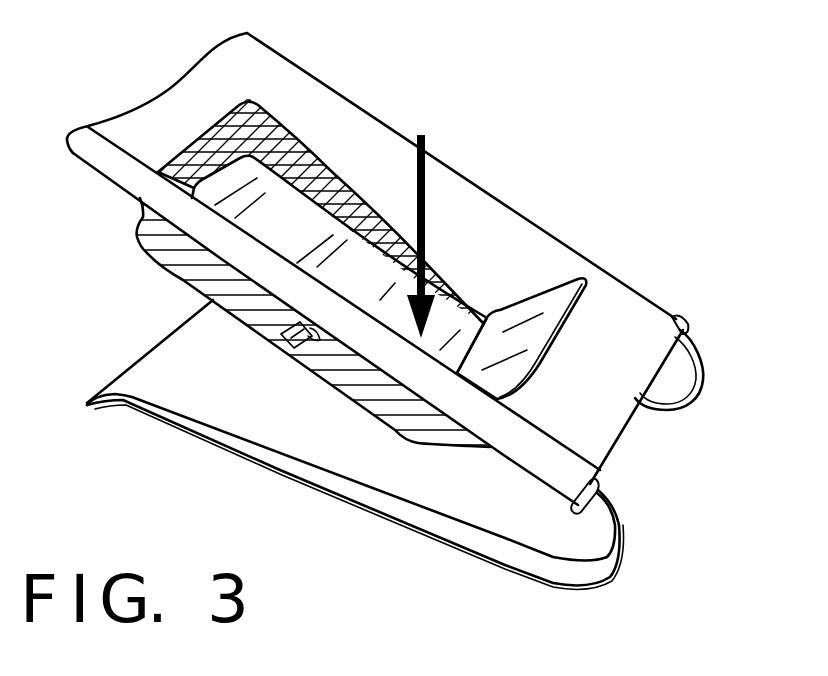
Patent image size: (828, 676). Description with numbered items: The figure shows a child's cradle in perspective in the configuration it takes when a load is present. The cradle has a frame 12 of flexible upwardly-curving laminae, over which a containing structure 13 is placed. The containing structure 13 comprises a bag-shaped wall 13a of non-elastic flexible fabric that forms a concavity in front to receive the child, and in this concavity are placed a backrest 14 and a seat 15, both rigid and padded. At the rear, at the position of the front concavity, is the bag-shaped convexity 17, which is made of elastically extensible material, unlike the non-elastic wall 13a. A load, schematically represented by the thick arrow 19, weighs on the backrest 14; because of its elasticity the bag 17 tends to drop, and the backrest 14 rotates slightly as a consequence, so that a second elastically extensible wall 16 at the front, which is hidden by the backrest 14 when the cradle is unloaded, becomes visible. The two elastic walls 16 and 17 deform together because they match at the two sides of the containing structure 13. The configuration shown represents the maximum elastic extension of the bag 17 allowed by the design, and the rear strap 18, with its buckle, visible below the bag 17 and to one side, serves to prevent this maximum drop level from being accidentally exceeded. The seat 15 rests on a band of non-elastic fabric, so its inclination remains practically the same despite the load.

The frame 12 is at (190, 415).
The containing structure 13 is at (586, 209).
The bag-shaped wall 13a is at (473, 213).
The backrest 14 is at (300, 230).
The seat 15 is at (512, 330).
The second elastically extensible wall 16 is at (250, 133).
The bag-shaped convexity 17 is at (393, 405).
The strap 18 is at (273, 353).
The thick arrow 19 is at (420, 216).